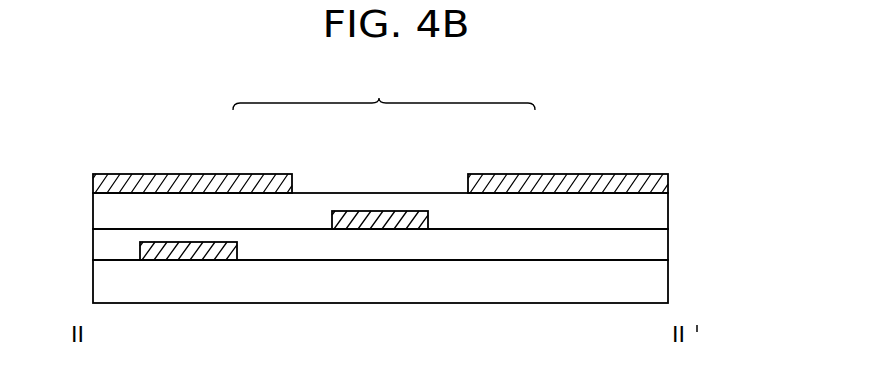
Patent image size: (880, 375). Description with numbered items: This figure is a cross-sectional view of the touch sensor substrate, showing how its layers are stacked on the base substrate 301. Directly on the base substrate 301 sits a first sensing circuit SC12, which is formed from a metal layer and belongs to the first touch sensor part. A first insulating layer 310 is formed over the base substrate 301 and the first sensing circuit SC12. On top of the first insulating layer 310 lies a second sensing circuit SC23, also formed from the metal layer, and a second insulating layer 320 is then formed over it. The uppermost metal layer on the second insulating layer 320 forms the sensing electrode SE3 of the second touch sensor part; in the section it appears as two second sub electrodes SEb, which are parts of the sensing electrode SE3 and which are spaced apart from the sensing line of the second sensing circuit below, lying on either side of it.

The base substrate 301 is at (663, 279).
The first insulating layer 310 is at (663, 243).
The second insulating layer 320 is at (663, 211).
The first sensing circuit SC12 is at (187, 251).
The second sensing circuit SC23 is at (373, 220).
The second sub electrode SEb is at (253, 174).
The sensing electrode SE3 is at (384, 93).